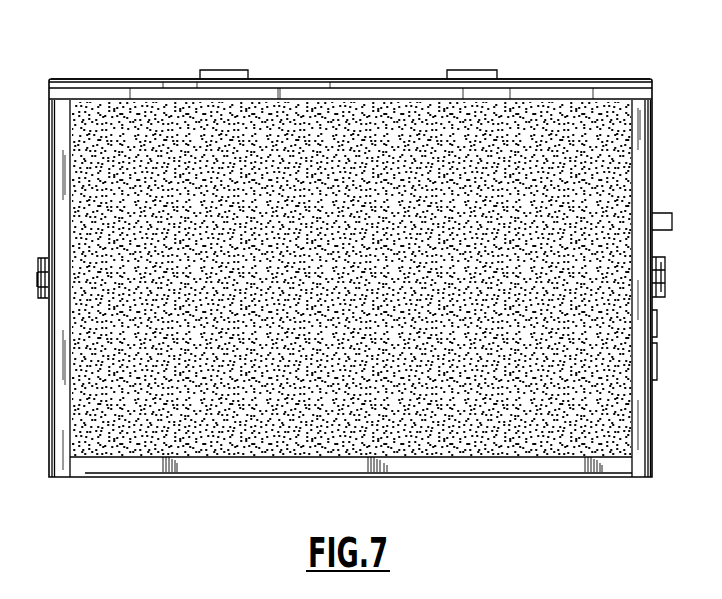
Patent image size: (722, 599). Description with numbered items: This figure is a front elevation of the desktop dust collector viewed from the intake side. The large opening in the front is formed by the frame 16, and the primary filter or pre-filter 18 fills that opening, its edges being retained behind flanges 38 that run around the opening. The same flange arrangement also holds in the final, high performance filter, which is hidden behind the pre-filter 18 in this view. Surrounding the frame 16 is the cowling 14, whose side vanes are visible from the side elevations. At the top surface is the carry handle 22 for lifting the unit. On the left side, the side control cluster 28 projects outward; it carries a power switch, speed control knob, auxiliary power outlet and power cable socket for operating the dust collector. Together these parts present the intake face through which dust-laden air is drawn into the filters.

The cowling 14 is at (623, 100).
The frame 16 is at (560, 91).
The carry handle 22 is at (373, 78).
The flanges 38 is at (63, 212).
The pre-filter 18 is at (303, 377).
The side control cluster 28 is at (672, 312).